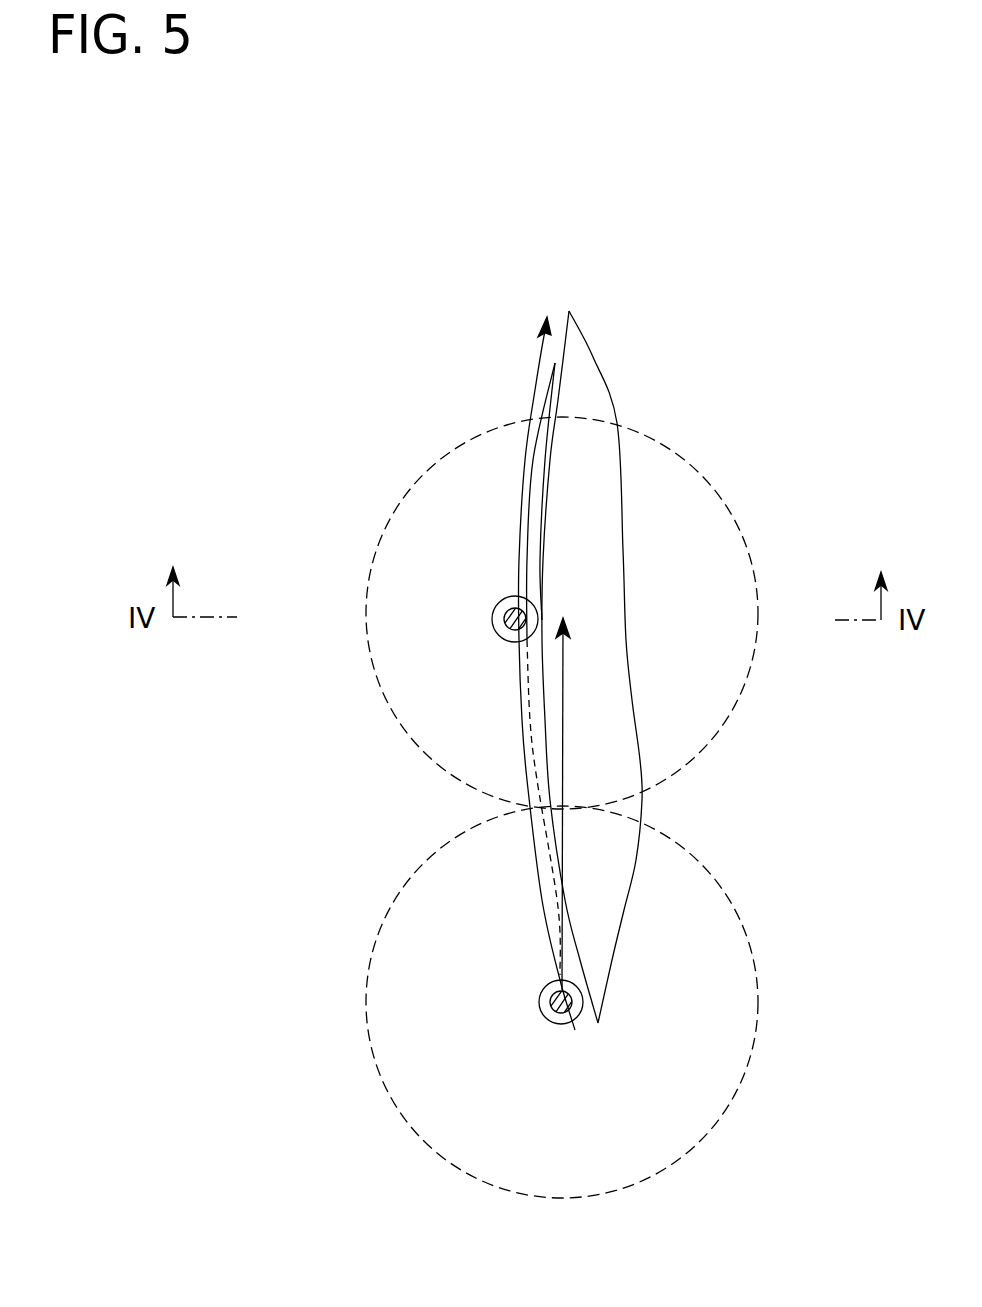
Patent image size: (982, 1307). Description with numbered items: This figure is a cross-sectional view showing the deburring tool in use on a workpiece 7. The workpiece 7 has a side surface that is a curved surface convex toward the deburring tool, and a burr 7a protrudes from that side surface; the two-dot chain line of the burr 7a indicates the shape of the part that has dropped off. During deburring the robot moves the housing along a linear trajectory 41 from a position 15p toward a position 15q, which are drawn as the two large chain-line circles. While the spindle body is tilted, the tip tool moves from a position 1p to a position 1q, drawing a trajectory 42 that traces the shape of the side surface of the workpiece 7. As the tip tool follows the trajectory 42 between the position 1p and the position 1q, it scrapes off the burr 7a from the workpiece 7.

The workpiece 7 is at (548, 442).
The burr 7a is at (524, 525).
The position of tip tool 1q is at (494, 608).
The position of tip tool 1p is at (540, 1003).
The trajectory 42 is at (522, 726).
The linear trajectory 41 is at (563, 752).
The position of housing 15q is at (735, 527).
The position of housing 15p is at (738, 918).